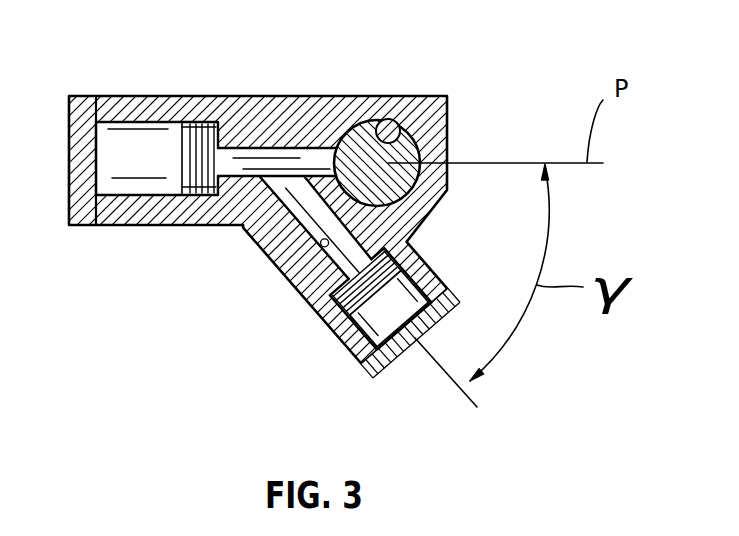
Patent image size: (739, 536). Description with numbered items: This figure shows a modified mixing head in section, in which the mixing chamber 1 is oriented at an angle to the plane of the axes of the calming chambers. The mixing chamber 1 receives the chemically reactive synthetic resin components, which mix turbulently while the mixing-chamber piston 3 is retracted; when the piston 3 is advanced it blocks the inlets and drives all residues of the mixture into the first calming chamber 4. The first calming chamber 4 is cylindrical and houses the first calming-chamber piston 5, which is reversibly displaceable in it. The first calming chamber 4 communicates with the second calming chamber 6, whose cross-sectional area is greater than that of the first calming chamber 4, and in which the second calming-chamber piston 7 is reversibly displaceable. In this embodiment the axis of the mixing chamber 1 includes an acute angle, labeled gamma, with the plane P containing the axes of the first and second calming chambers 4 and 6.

The mixing chamber 1 is at (294, 287).
The mixing-chamber piston 3 is at (261, 247).
The first calming chamber 4 is at (307, 149).
The first calming-chamber piston 5 is at (240, 149).
The second calming chamber 6 is at (373, 120).
The second calming-chamber piston 7 is at (401, 131).